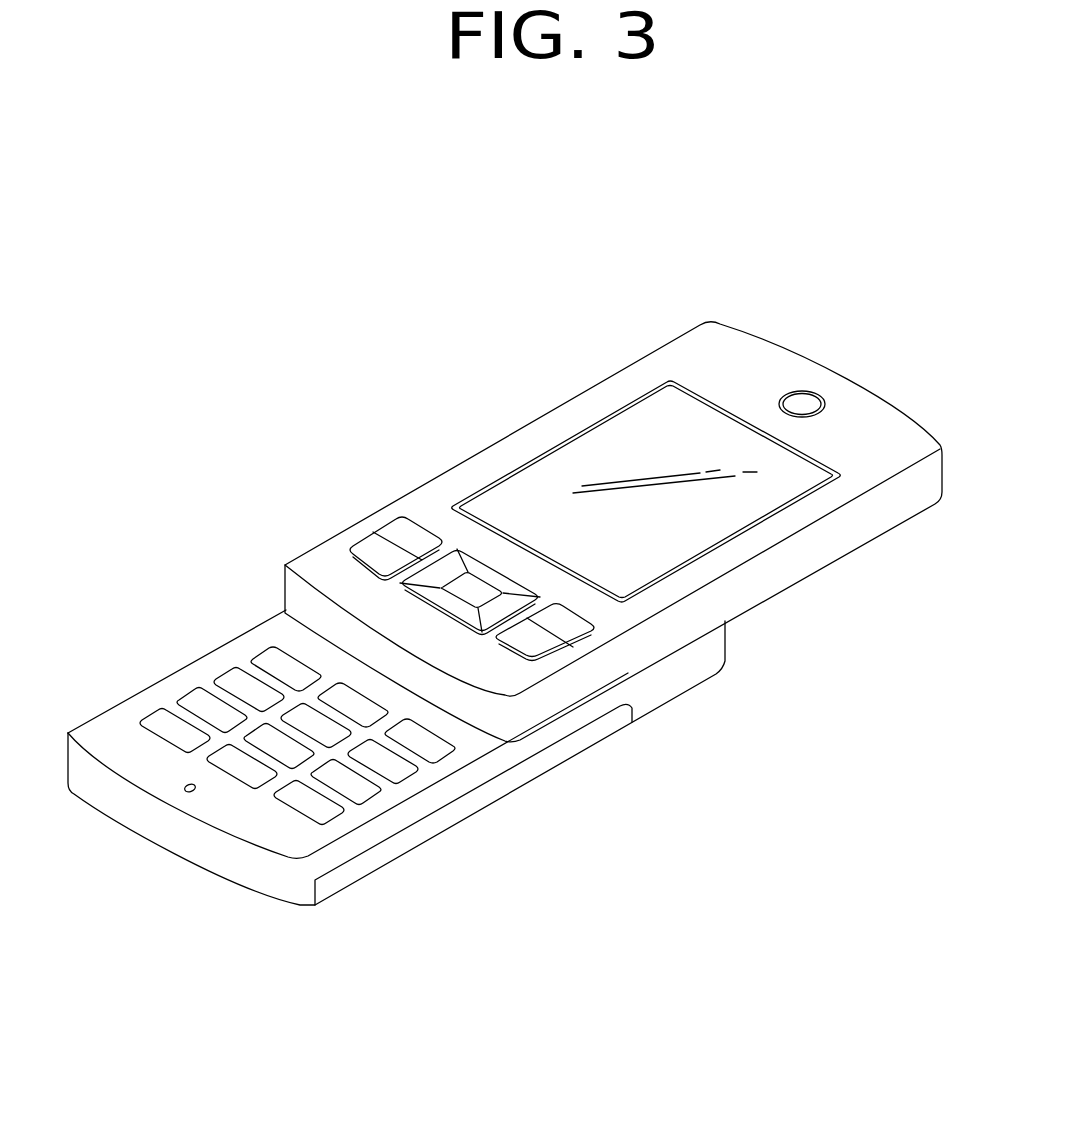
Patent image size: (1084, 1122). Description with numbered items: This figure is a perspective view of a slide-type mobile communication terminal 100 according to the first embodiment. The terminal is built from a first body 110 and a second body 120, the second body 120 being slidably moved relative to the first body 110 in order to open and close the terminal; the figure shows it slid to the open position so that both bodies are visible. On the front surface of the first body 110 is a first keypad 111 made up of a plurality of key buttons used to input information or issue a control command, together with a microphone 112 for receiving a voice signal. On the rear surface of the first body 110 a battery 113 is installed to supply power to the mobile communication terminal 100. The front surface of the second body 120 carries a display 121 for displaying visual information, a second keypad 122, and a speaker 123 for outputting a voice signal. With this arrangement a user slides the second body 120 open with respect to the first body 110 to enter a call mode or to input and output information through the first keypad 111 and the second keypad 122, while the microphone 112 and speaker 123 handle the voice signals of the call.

The mobile communication terminal 100 is at (392, 316).
The first body 110 is at (655, 690).
The first keypad 111 is at (325, 813).
The microphone 112 is at (185, 787).
The battery 113 is at (558, 752).
The second body 120 is at (848, 528).
The display 121 is at (598, 466).
The second keypad 122 is at (370, 548).
The speaker 123 is at (802, 402).